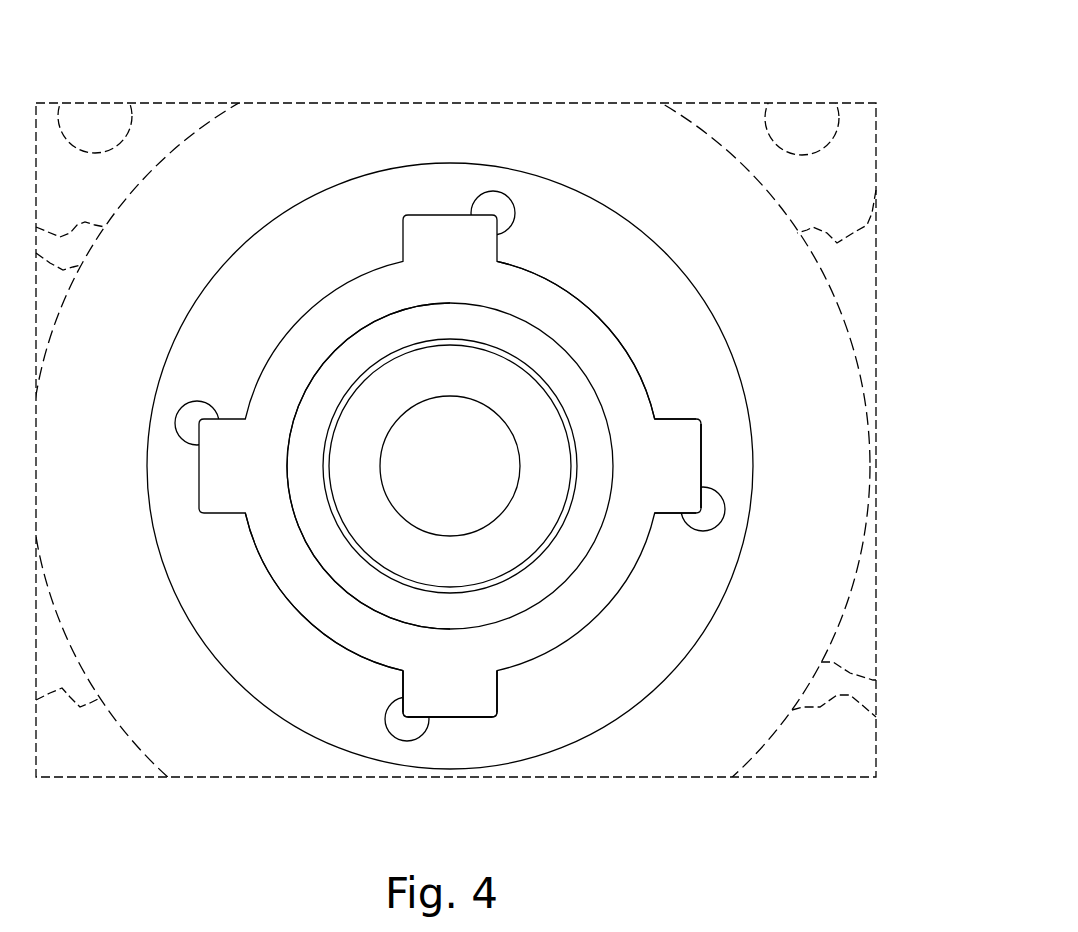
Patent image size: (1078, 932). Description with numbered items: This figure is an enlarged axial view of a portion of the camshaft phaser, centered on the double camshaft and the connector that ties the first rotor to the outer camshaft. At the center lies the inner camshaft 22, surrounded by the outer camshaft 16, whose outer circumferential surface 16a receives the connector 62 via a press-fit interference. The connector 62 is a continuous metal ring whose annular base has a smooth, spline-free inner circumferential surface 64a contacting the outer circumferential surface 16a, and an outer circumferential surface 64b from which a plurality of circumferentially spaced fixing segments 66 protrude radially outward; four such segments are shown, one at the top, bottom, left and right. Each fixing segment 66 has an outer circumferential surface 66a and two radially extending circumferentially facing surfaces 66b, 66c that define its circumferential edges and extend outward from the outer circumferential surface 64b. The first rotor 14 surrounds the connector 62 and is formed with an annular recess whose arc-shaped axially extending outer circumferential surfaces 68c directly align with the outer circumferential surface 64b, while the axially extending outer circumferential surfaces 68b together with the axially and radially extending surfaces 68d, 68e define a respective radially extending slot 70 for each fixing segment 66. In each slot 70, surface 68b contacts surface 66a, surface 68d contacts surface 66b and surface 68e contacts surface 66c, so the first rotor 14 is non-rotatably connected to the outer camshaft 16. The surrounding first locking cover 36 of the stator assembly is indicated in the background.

The first rotor 14 is at (307, 263).
The outer camshaft 16 is at (555, 377).
The outer circumferential surface 16a is at (303, 542).
The inner camshaft 22 is at (487, 383).
The first locking cover 36 is at (227, 187).
The connector 62 is at (540, 302).
The inner circumferential surface 64a is at (340, 590).
The outer circumferential surface 64b is at (337, 647).
The fixing segments 66 is at (469, 680).
The outer circumferential surface 66a is at (445, 718).
The radially extending circumferentially facing surface 66b is at (401, 690).
The radially extending circumferentially facing surface 66c is at (498, 695).
The axially extending outer circumferential surface 68b is at (703, 458).
The axially extending outer circumferential surface 68c is at (636, 358).
The axially and radially extending surface 68d is at (672, 517).
The axially and radially extending surface 68e is at (680, 420).
The radially extending slot 70 is at (716, 435).